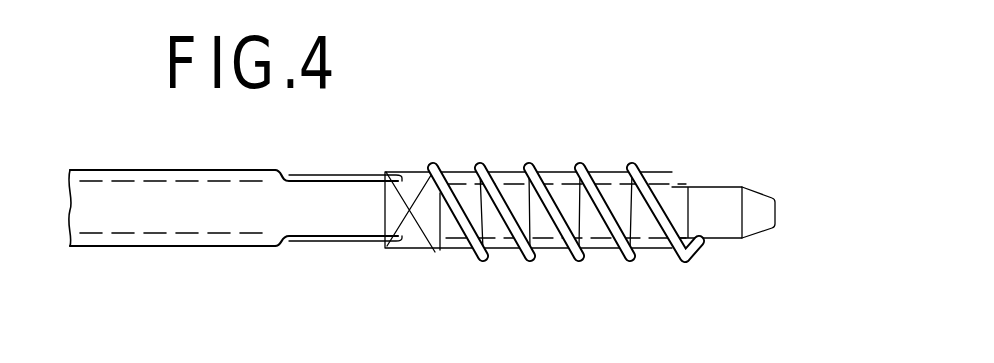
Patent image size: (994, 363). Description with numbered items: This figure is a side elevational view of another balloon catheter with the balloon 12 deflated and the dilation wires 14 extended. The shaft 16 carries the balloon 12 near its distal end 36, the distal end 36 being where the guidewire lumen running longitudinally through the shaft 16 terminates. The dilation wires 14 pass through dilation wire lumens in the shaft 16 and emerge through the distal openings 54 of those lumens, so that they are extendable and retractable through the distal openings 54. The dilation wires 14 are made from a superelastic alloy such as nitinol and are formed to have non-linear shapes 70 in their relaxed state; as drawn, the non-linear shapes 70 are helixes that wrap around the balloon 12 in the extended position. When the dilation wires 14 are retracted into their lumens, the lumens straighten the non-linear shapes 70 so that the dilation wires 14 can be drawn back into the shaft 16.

The balloon 12 is at (558, 252).
The dilation wires 14 is at (347, 171).
The shaft 16 is at (194, 171).
The distal end of the shaft 36 is at (782, 197).
The distal openings of the dilation wire lumens 54 is at (282, 172).
The non-linear shapes 70 is at (407, 193).